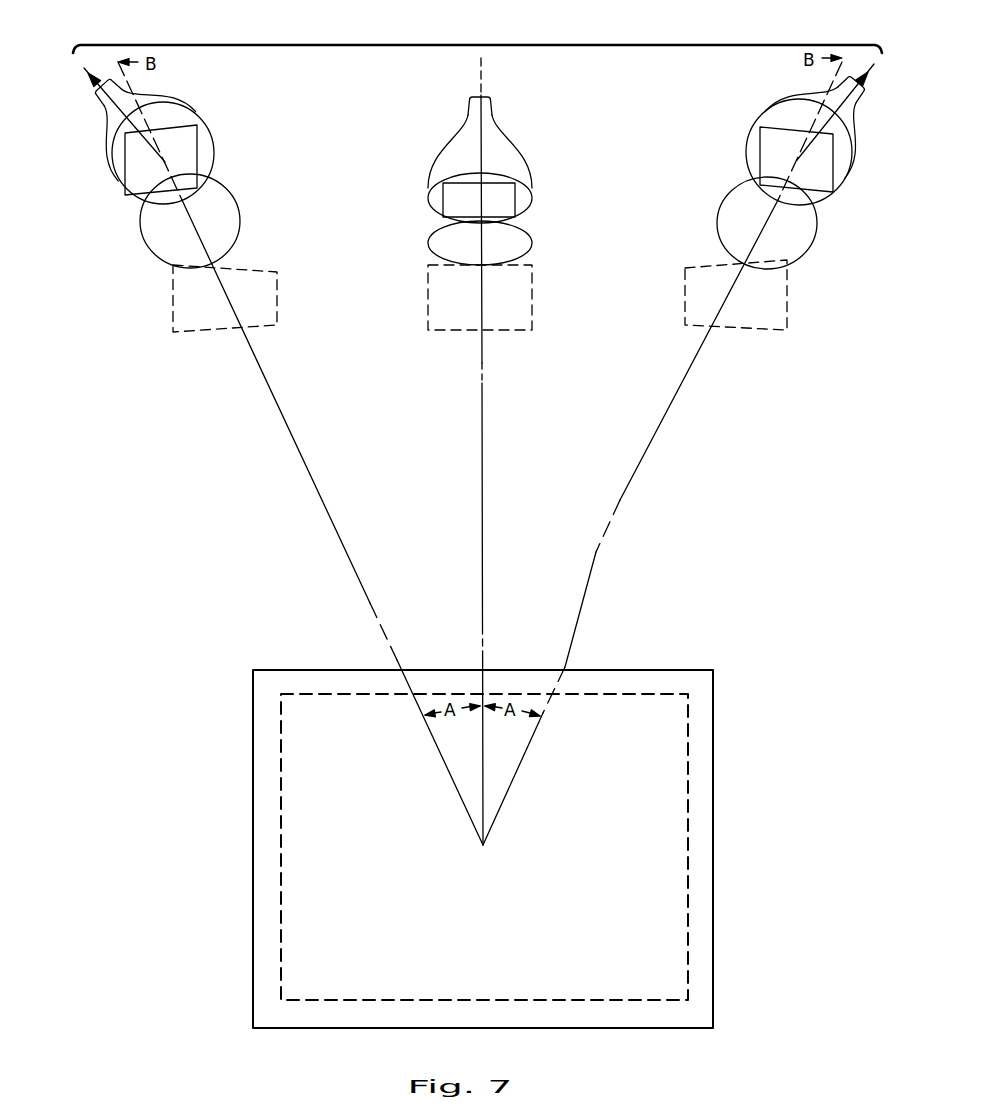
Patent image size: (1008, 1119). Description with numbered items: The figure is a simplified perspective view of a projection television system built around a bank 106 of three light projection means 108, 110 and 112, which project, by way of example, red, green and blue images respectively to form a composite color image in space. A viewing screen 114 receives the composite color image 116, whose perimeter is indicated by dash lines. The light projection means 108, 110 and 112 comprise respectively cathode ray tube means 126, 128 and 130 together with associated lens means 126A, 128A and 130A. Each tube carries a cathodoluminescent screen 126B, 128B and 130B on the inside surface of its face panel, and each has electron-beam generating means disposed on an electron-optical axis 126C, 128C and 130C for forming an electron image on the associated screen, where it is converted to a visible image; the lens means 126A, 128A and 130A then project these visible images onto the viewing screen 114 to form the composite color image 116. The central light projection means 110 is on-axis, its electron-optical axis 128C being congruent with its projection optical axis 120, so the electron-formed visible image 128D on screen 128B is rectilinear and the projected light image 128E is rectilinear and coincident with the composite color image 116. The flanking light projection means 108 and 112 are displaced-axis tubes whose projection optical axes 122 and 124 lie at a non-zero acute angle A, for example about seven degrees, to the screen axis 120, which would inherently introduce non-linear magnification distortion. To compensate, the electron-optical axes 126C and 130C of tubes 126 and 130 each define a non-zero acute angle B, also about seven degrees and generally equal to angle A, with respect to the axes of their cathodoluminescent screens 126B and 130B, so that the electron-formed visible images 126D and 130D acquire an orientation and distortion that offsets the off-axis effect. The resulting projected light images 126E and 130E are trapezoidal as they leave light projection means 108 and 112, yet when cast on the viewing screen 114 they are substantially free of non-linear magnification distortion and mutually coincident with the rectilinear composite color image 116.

The bank 106 is at (481, 45).
The light projection means 108 is at (187, 96).
The light projection means 110 is at (413, 158).
The light projection means 112 is at (751, 103).
The viewing screen 114 is at (253, 830).
The composite color image 116 is at (281, 888).
The projection optical axis 120 is at (483, 597).
The projection optical axis 122 is at (368, 600).
The projection optical axis 124 is at (592, 610).
The cathode ray tube means 126 is at (107, 148).
The lens means 126A is at (140, 230).
The cathodoluminescent screen 126B is at (120, 175).
The electron-optical axis 126C is at (120, 117).
The electron-formed visible image 126D is at (198, 148).
The light image 126E is at (163, 282).
The cathode ray tube means 128 is at (450, 138).
The lens means 128A is at (430, 242).
The cathodoluminescent screen 128B is at (437, 193).
The electron-optical axis 128C is at (483, 128).
The electron-formed visible image 128D is at (517, 193).
The light image 128E is at (418, 295).
The cathode ray tube means 130 is at (852, 137).
The lens means 130A is at (818, 232).
The cathodoluminescent screen 130B is at (837, 173).
The electron-optical axis 130C is at (840, 108).
The electron-formed visible image 130D is at (760, 152).
The light image 130E is at (797, 288).